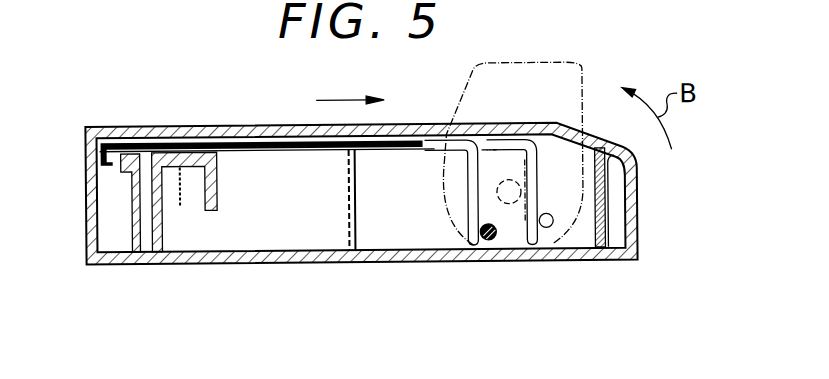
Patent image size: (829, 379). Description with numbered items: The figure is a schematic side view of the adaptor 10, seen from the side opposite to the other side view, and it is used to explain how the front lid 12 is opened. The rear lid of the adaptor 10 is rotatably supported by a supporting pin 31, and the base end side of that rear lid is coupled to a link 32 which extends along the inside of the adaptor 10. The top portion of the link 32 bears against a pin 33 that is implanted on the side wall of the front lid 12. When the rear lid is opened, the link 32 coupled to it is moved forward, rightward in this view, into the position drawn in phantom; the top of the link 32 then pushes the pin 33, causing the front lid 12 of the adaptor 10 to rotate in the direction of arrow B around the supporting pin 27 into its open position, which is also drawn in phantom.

The adaptor 10 is at (300, 140).
The front lid 12 is at (583, 68).
The supporting pin 27 is at (510, 181).
The supporting pin 31 is at (140, 235).
The link 32 is at (248, 147).
The pin 33 is at (487, 241).